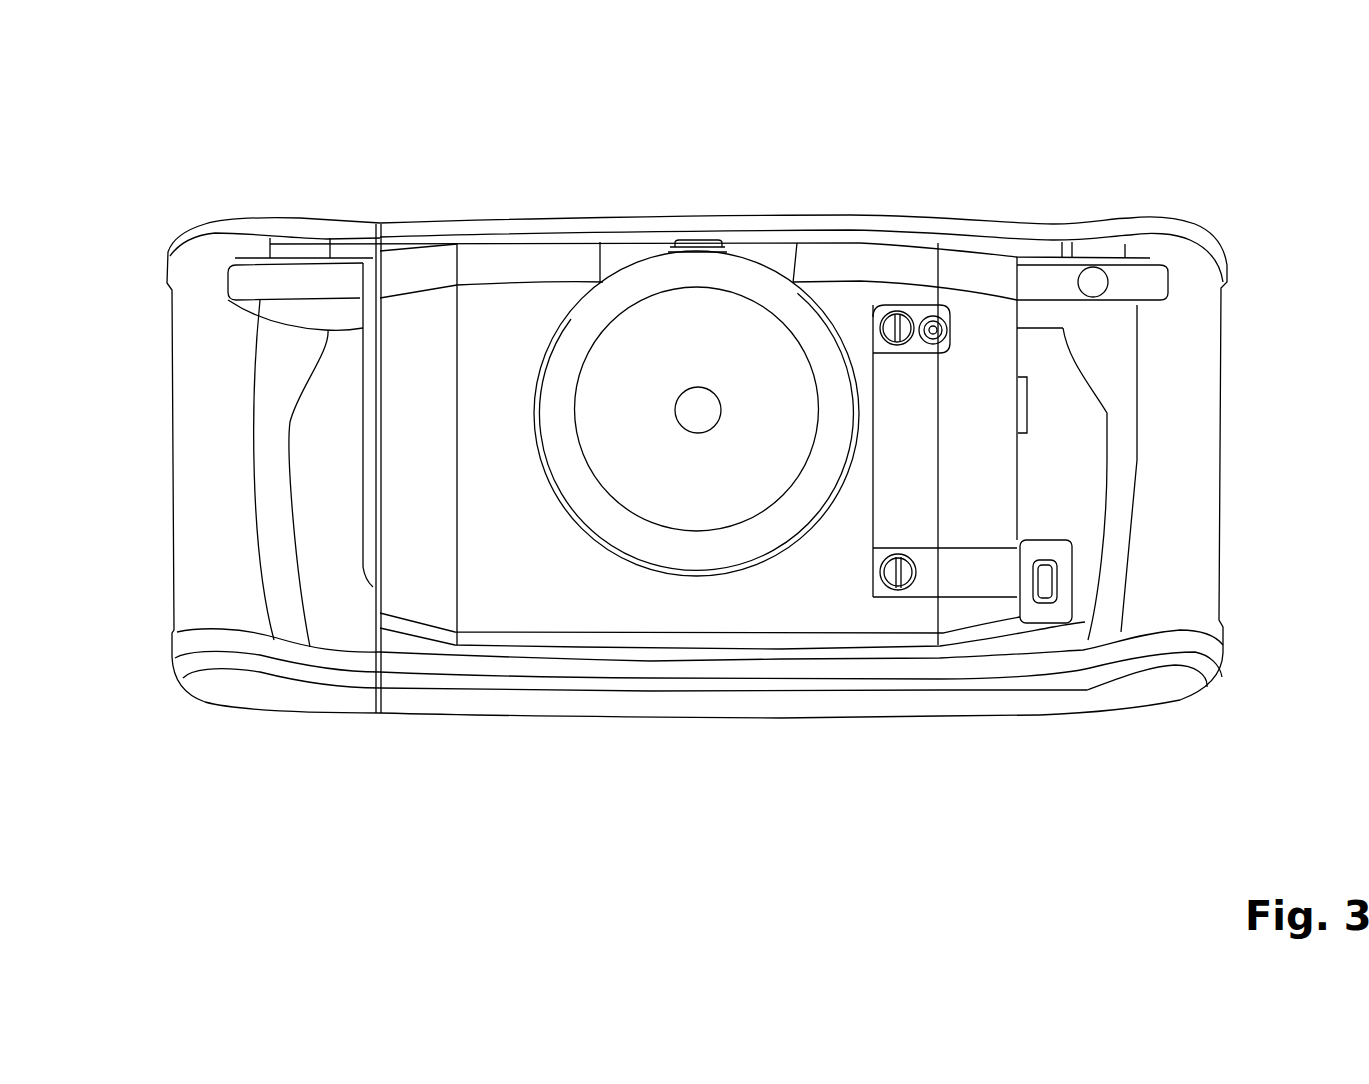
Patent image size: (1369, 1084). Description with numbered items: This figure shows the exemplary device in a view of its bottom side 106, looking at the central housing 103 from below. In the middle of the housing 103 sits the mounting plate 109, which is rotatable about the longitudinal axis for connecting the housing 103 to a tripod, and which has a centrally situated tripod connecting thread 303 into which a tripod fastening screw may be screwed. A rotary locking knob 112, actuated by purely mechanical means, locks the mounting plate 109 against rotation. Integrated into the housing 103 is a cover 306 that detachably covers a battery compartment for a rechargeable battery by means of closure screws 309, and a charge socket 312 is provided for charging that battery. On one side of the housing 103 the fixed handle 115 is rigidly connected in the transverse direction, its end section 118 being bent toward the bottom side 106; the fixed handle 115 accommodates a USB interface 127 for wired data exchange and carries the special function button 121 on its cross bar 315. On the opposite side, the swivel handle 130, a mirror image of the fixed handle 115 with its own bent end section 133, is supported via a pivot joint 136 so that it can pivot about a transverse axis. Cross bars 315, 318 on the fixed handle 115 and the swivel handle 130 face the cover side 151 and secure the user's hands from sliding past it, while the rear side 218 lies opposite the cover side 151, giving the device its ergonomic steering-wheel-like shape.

The central housing 103 is at (810, 603).
The bottom side 106 is at (512, 331).
The mounting plate 109 is at (757, 353).
The rotary locking knob 112 is at (698, 240).
The fixed handle 115 is at (1278, 621).
The end section 118 is at (1194, 440).
The special function button 121 is at (1093, 282).
The USB interface 127 is at (1022, 408).
The swivel handle 130 is at (160, 603).
The bent end section 133 is at (195, 474).
The pivot joint 136 is at (371, 453).
The cover side 151 is at (545, 212).
The rear side 218 is at (679, 708).
The tripod connecting thread 303 is at (696, 414).
The cover 306 is at (975, 553).
The closure screws 309 is at (890, 330).
The charge socket 312 is at (935, 328).
The cross bar 315 is at (1090, 318).
The cross bar 318 is at (310, 318).